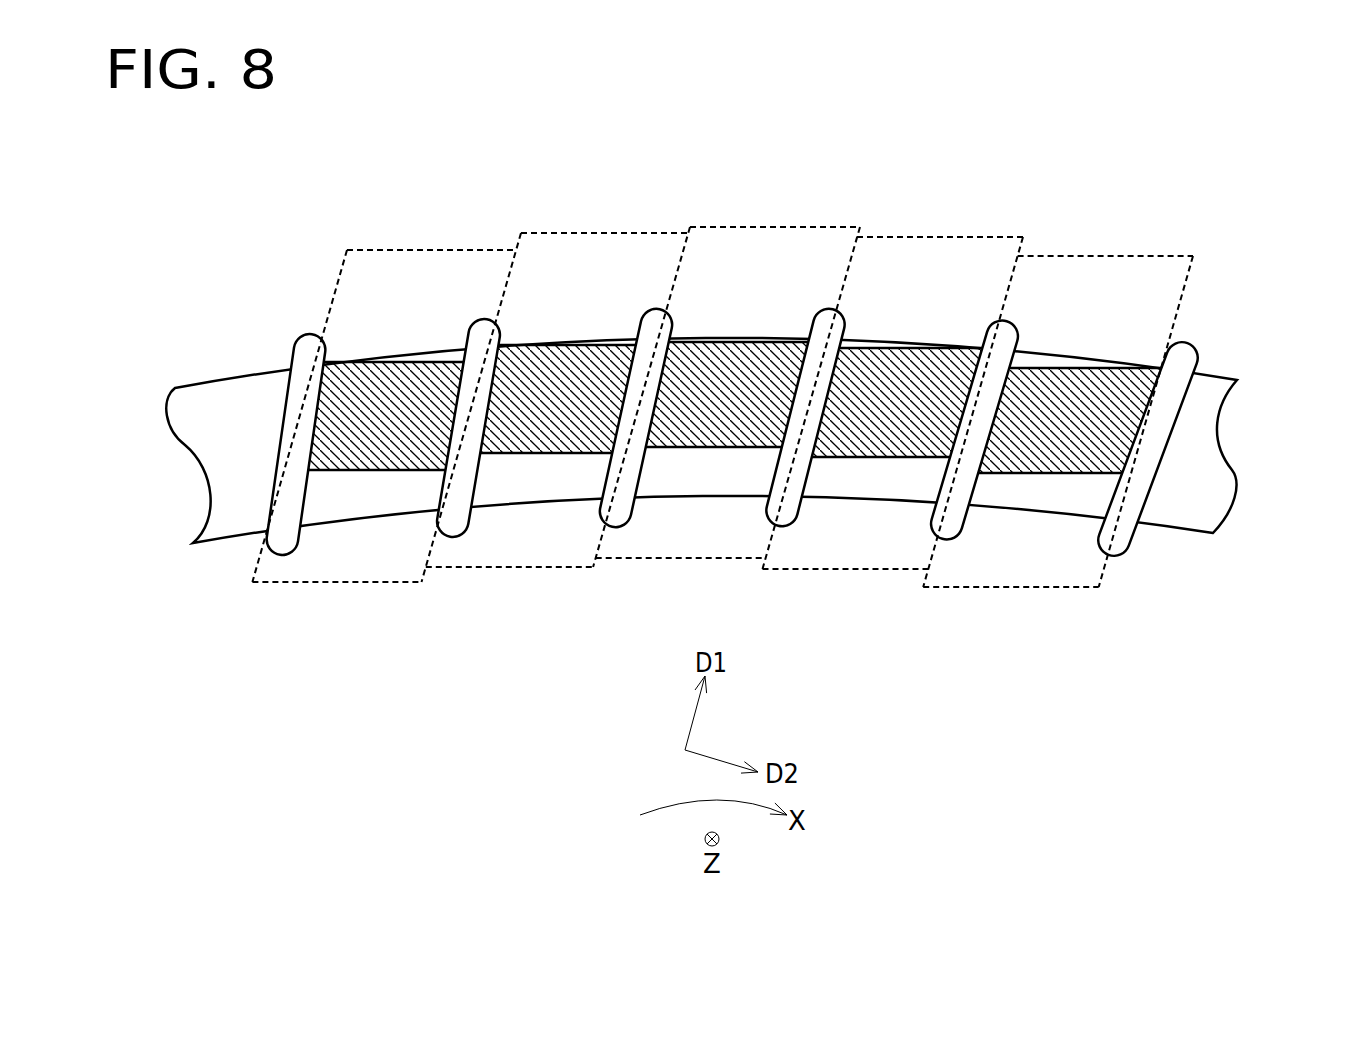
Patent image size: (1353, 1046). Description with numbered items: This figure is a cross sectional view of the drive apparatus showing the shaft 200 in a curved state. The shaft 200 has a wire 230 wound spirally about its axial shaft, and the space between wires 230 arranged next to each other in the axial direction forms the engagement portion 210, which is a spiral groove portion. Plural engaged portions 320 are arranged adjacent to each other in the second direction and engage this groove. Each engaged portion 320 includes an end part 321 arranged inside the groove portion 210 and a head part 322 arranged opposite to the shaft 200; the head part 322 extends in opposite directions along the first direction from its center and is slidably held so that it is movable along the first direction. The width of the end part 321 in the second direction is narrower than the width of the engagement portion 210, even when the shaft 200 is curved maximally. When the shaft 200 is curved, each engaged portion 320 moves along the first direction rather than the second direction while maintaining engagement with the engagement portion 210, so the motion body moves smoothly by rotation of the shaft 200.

The shaft 200 is at (1220, 500).
The engagement portion 210 is at (372, 503).
The wire 230 is at (280, 557).
The engaged portion 320 is at (370, 362).
The end part 321 is at (735, 332).
The head part 322 is at (490, 250).